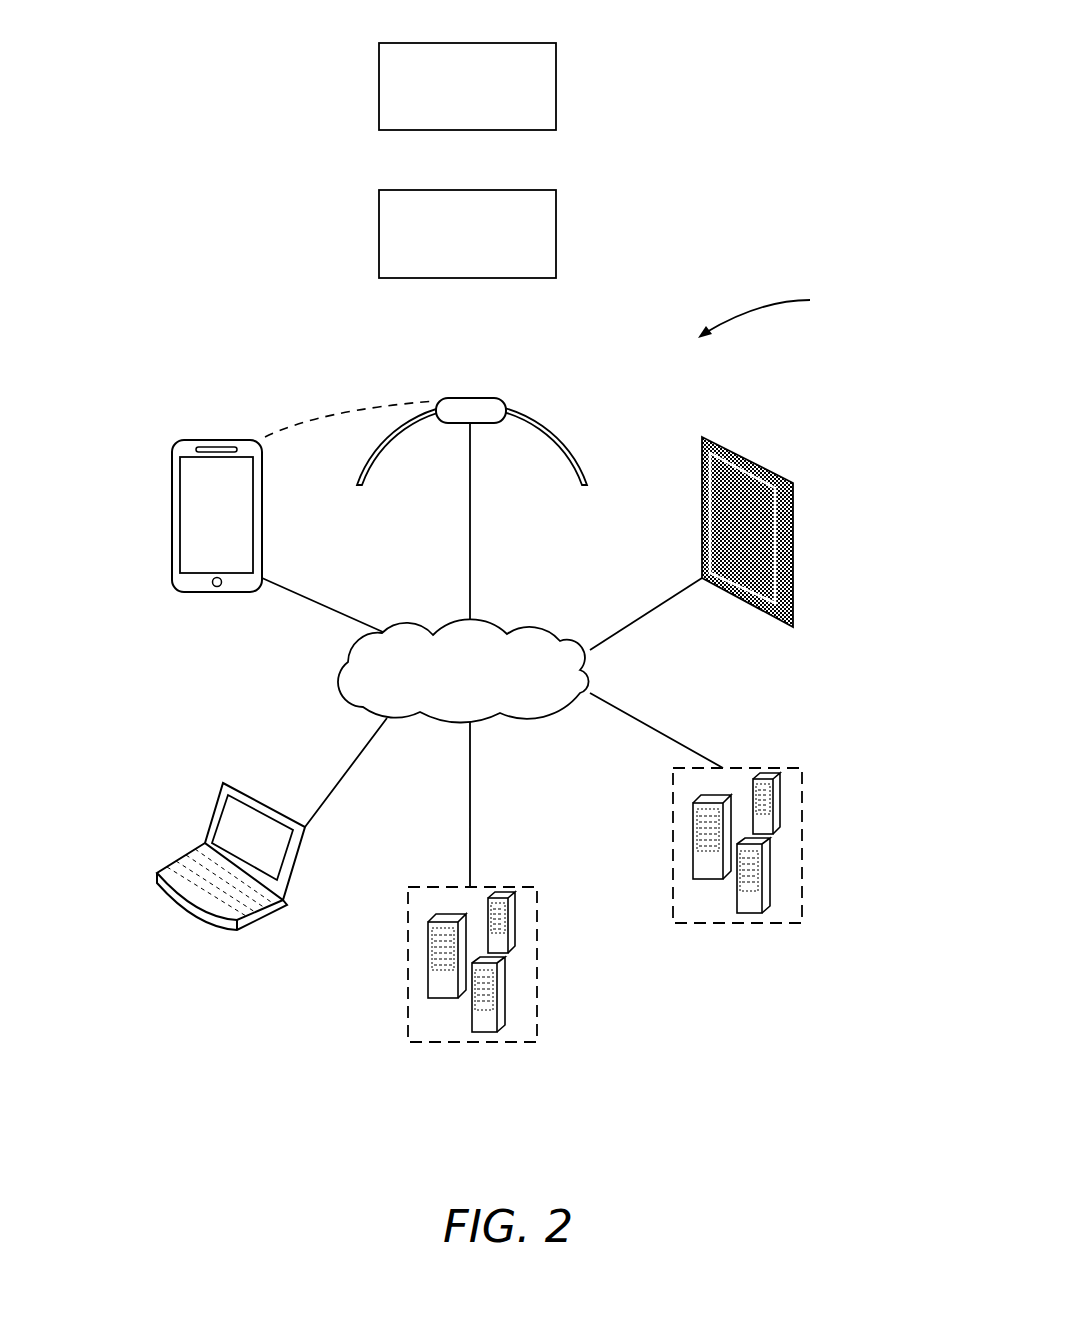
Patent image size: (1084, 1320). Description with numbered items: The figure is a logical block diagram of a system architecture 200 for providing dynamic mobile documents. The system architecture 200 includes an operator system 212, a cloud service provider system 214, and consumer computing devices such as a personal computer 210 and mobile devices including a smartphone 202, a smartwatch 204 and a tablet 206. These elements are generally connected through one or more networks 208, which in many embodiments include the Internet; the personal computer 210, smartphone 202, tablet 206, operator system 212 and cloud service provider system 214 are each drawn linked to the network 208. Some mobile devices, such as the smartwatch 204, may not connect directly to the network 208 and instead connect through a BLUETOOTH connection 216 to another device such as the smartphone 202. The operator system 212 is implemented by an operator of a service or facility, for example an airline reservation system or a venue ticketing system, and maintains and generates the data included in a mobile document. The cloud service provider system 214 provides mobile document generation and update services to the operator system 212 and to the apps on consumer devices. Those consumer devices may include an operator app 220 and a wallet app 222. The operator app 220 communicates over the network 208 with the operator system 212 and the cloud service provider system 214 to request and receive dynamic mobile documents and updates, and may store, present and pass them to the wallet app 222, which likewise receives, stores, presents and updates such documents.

The system architecture 200 is at (784, 312).
The smartphone 202 is at (210, 440).
The smartwatch 204 is at (492, 398).
The tablet 206 is at (776, 480).
The network 208 is at (352, 662).
The personal computer 210 is at (223, 783).
The operator system 212 is at (445, 887).
The cloud service provider system 214 is at (780, 768).
The BLUETOOTH connection 216 is at (380, 402).
The operator app 220 is at (408, 43).
The wallet app 222 is at (408, 190).